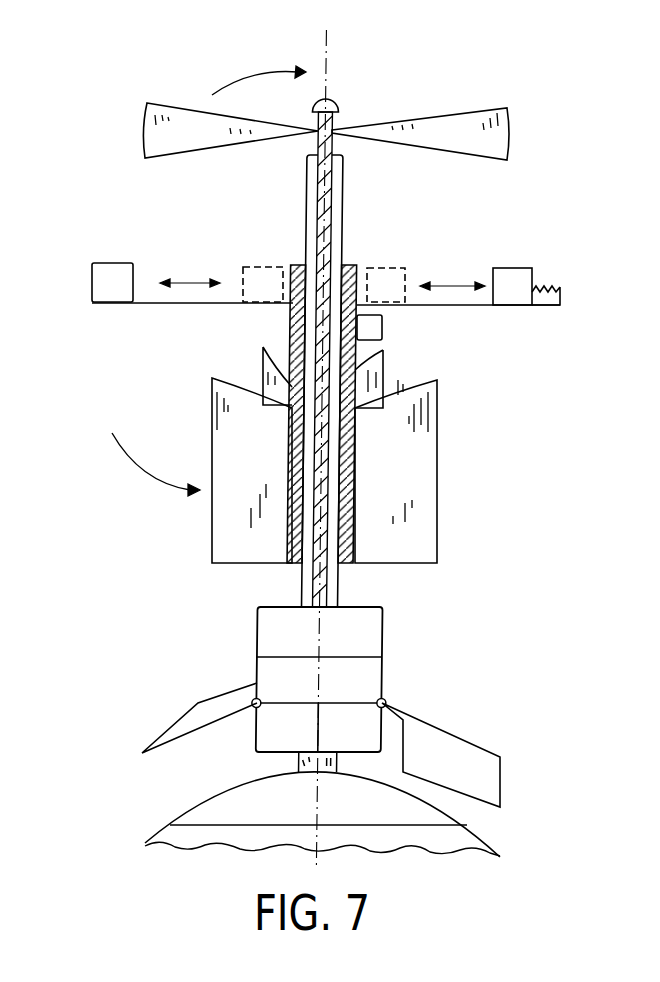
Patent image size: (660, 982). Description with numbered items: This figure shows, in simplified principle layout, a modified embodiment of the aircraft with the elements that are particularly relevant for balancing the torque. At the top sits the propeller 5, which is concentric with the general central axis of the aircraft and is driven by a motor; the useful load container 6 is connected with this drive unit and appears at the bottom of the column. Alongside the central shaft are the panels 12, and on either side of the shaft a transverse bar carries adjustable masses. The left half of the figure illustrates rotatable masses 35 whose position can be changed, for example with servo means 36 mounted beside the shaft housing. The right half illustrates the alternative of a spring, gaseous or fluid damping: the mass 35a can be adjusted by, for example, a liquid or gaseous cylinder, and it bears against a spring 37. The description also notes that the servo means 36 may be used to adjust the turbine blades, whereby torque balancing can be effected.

The propeller 5 is at (150, 138).
The rotatable masses 35 is at (92, 285).
The slide weight 35a is at (517, 272).
The spring 37 is at (550, 280).
The servo means 36 is at (373, 327).
The wind panels / sails 12 is at (425, 453).
The useful load container 6 is at (298, 812).